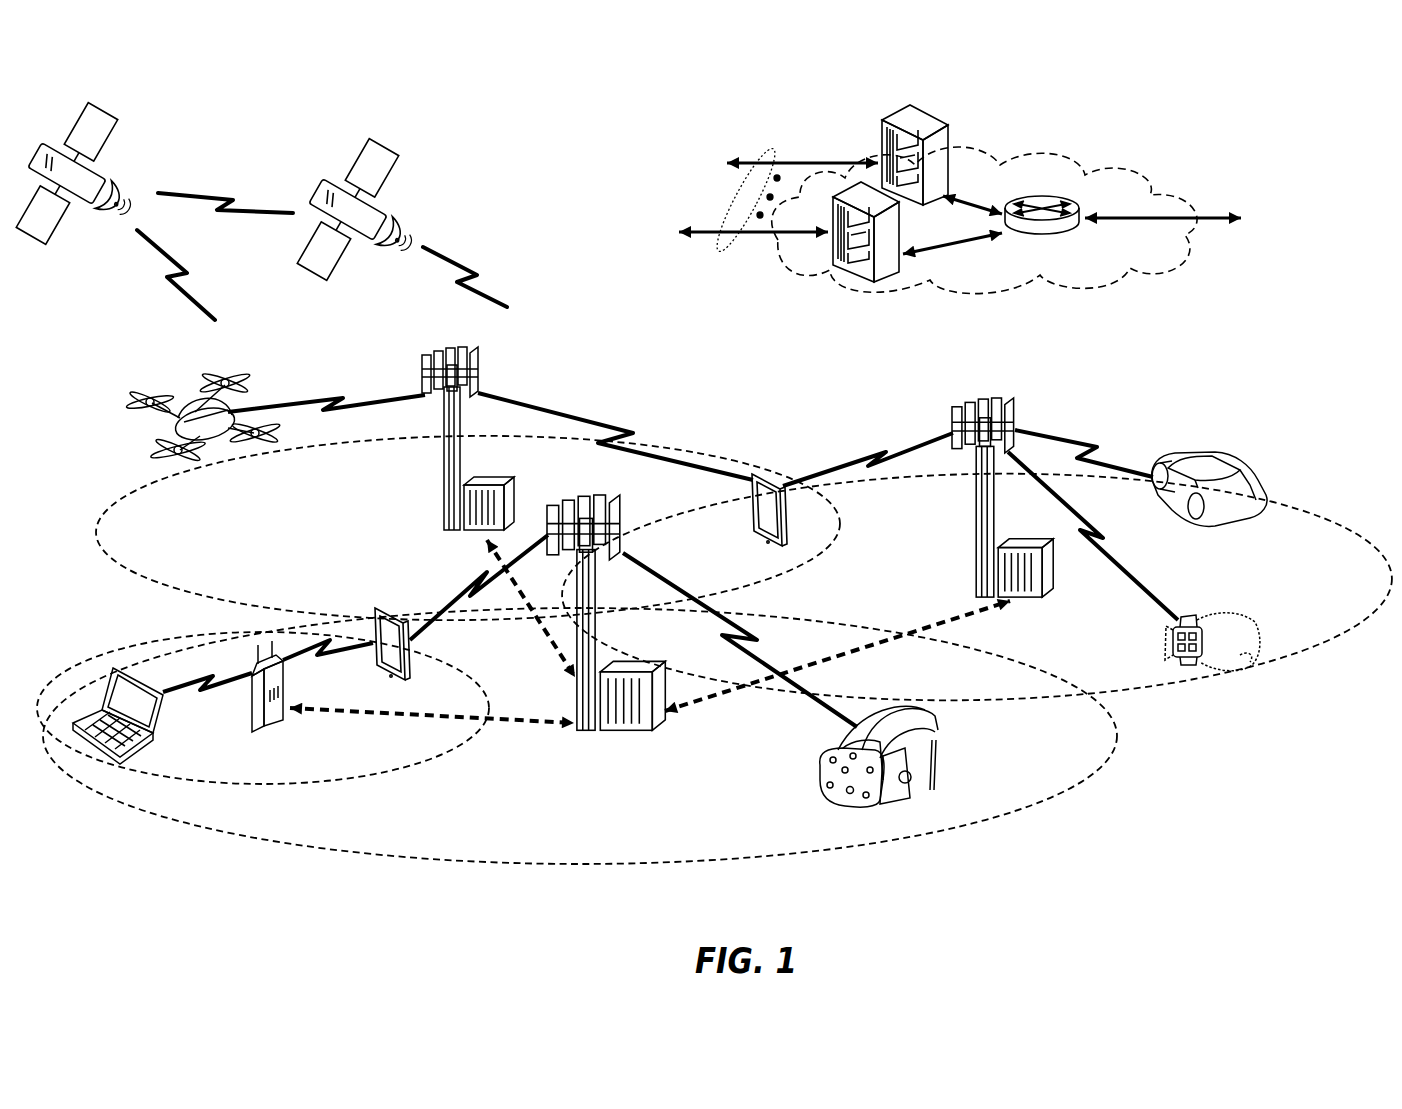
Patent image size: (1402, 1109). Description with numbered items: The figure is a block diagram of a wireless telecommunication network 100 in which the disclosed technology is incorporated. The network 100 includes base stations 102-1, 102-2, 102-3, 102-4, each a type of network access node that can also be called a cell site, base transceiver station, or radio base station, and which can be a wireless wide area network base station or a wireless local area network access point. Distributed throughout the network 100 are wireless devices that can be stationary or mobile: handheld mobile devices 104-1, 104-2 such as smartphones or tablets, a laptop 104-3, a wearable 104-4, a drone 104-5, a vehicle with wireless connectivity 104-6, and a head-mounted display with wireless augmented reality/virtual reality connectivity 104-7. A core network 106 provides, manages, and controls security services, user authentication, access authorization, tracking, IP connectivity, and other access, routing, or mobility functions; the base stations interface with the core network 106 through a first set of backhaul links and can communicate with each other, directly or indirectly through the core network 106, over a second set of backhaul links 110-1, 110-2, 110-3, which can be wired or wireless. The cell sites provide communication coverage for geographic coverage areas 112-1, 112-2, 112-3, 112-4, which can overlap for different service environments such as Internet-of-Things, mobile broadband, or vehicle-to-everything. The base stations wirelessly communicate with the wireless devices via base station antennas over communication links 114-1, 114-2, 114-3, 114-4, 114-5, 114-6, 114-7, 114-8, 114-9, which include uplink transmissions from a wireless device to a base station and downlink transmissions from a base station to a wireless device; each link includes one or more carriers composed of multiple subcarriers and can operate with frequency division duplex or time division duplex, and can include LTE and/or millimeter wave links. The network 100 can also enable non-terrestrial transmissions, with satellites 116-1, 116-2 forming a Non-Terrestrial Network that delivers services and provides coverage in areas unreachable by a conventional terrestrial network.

The wireless telecommunication network 100 is at (1288, 137).
The base station 102-1 is at (587, 733).
The base station 102-2 is at (445, 483).
The base station 102-3 is at (978, 517).
The base station 102-4 is at (252, 722).
The handheld mobile device 104-1 is at (410, 660).
The handheld mobile device 104-2 is at (752, 515).
The laptop 104-3 is at (97, 760).
The wearable 104-4 is at (1195, 620).
The drone 104-5 is at (210, 445).
The vehicle with wireless connectivity 104-6 is at (1235, 472).
The head-mounted display 104-7 is at (923, 752).
The core network 106 is at (1082, 290).
The backhaul link 110-1 is at (325, 712).
The backhaul link 110-2 is at (905, 638).
The backhaul link 110-3 is at (548, 637).
The geographic coverage area 112-1 is at (517, 864).
The geographic coverage area 112-2 is at (390, 772).
The geographic coverage area 112-3 is at (163, 590).
The geographic coverage area 112-4 is at (1290, 523).
The communication link 114-1 is at (760, 642).
The communication link 114-2 is at (468, 590).
The communication link 114-3 is at (173, 697).
The communication link 114-4 is at (330, 657).
The communication link 114-5 is at (337, 395).
The communication link 114-6 is at (618, 438).
The communication link 114-7 is at (876, 458).
The communication link 114-8 is at (1110, 560).
The communication link 114-9 is at (1080, 448).
The satellite 116-1 is at (122, 181).
The satellite 116-2 is at (406, 224).